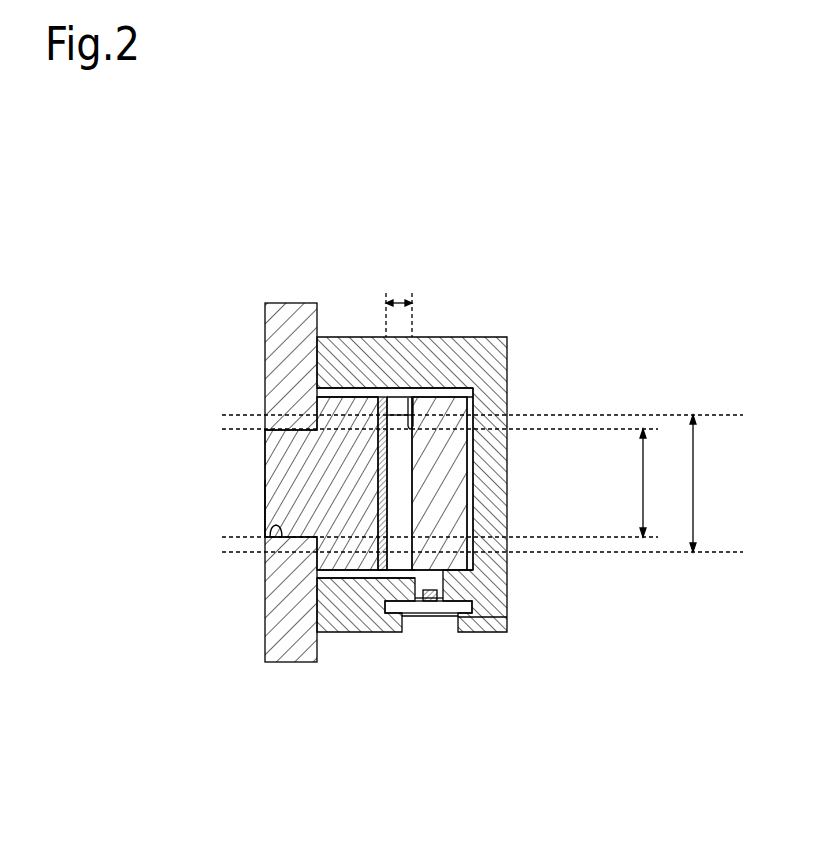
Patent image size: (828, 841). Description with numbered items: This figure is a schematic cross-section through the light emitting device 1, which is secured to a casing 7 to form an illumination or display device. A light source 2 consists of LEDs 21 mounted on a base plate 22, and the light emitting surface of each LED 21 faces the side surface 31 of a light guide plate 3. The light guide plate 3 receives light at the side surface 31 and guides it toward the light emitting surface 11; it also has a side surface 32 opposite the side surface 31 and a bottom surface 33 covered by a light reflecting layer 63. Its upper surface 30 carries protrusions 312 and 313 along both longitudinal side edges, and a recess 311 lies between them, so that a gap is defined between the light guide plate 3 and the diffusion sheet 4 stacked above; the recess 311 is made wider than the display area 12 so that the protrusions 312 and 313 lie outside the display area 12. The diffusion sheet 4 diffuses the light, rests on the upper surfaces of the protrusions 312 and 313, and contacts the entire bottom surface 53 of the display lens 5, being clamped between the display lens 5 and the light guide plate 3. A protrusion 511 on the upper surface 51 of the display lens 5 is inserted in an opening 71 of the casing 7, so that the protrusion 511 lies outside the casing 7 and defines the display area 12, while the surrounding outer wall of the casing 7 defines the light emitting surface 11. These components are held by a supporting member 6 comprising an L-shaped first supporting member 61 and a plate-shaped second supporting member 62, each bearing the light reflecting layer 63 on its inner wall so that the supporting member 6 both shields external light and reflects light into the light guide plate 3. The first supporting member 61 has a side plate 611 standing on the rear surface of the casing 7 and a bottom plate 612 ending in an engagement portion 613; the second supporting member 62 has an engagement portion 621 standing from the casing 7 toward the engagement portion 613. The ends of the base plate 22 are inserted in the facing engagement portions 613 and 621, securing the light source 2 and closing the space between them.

The light emitting device 1 is at (506, 261).
The light emitting surface 11 is at (265, 360).
The display area 12 is at (195, 508).
The light source 2 is at (426, 613).
The LED 21 is at (432, 597).
The base plate 22 is at (417, 612).
The light guide plate 3 is at (507, 382).
The upper surface 30 is at (404, 408).
The side surface 31 is at (495, 595).
The recess 311 is at (405, 500).
The protrusion 312 is at (410, 398).
The protrusion 313 is at (383, 577).
The side surface 32 is at (507, 337).
The bottom surface 33 is at (492, 497).
The diffusion sheet 4 is at (317, 660).
The display lens 5 is at (290, 448).
The upper surface 51 is at (265, 452).
The protrusion 511 is at (265, 498).
The bottom surface 53 is at (342, 392).
The supporting member 6 is at (420, 762).
The first supporting member 61 is at (466, 618).
The side plate 611 is at (380, 395).
The bottom plate 612 is at (464, 407).
The engagement portion 613 is at (505, 620).
The second supporting member 62 is at (396, 572).
The engagement portion 621 is at (390, 568).
The light reflecting layer 63 is at (470, 531).
The casing 7 is at (287, 306).
The opening 71 is at (266, 540).